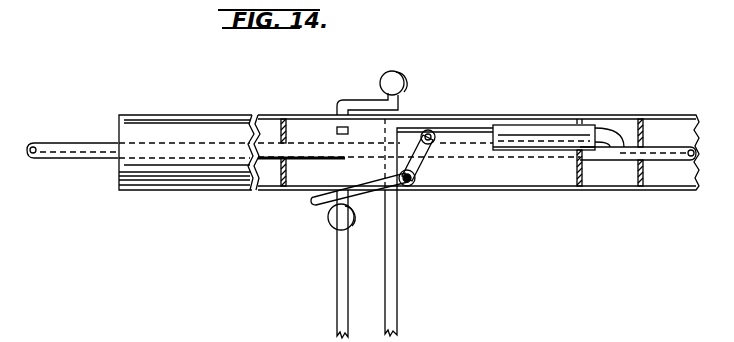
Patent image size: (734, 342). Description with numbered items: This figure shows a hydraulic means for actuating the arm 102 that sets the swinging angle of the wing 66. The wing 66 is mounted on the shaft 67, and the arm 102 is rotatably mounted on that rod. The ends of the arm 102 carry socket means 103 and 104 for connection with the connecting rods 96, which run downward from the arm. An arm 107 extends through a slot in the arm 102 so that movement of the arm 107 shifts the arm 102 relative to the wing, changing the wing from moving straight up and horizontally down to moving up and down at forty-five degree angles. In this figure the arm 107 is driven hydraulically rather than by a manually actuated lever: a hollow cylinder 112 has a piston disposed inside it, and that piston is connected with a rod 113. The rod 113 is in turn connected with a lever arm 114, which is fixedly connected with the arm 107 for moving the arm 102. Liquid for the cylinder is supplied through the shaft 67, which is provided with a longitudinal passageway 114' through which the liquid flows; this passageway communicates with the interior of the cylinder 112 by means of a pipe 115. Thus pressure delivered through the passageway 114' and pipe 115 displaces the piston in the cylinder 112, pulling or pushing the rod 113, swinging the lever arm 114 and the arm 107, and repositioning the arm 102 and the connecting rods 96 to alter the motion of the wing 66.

The shaft 67 is at (44, 142).
The wing 66 is at (172, 115).
The longitudinal passageway 114' is at (60, 197).
The arm 102 is at (345, 100).
The socket means 103 is at (403, 76).
The socket means 104 is at (328, 219).
The connecting rods 96 is at (337, 250).
The arm 107 is at (387, 190).
The rod 113 is at (472, 138).
The lever arm 114 is at (445, 200).
The hollow cylinder 112 is at (526, 125).
The pipe 115 is at (612, 127).